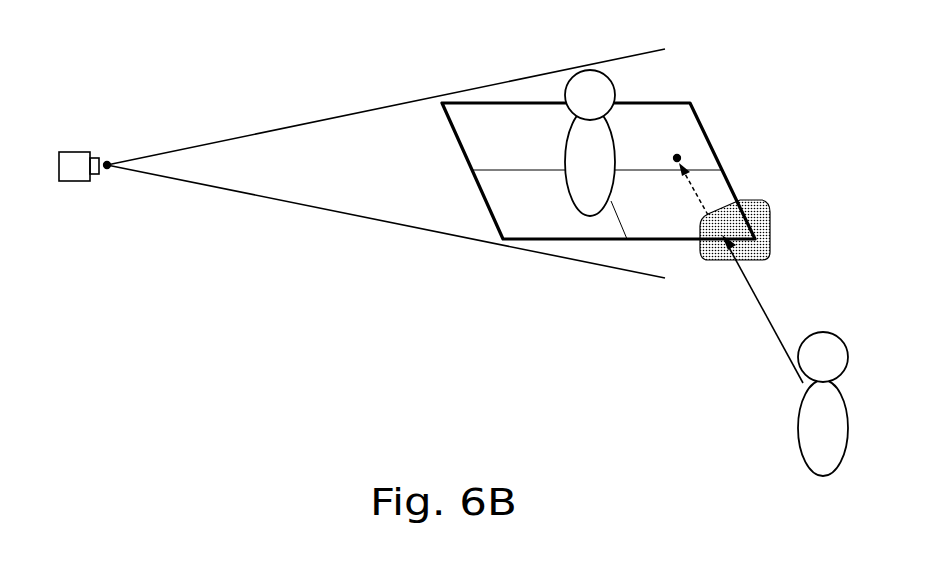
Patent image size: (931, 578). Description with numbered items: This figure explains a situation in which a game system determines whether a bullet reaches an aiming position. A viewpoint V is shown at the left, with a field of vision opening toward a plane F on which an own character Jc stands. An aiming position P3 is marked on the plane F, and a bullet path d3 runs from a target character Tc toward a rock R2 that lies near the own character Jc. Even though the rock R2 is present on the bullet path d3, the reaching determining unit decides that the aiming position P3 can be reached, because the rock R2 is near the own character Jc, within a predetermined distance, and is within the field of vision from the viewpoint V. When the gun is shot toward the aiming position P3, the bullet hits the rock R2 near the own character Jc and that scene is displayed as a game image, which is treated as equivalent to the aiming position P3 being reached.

The viewpoint V is at (104, 160).
The field / floor region F is at (693, 100).
The own character Jc is at (571, 72).
The aiming position P3 is at (680, 156).
The rock R2 is at (772, 218).
The bullet path d3 is at (762, 325).
The person T (current) Tc is at (834, 364).